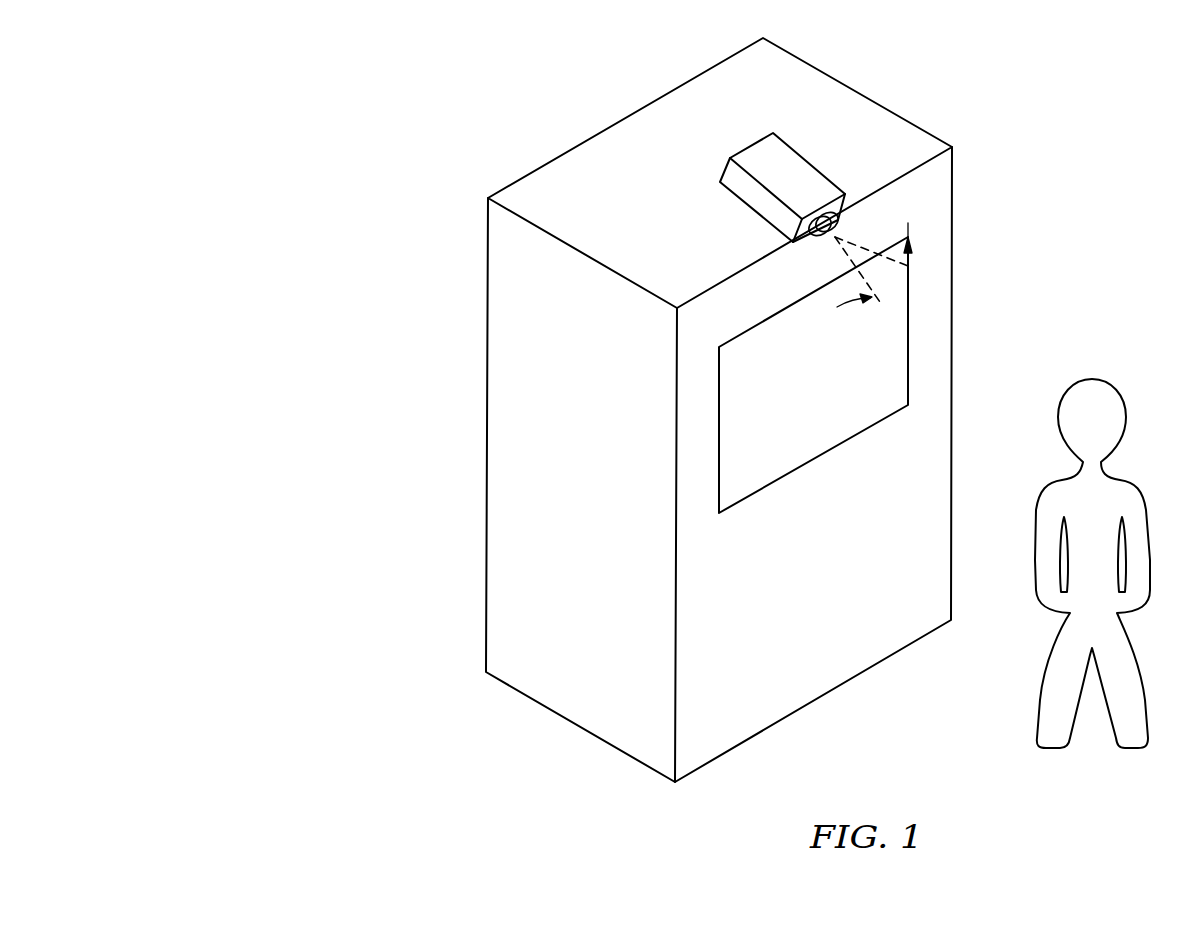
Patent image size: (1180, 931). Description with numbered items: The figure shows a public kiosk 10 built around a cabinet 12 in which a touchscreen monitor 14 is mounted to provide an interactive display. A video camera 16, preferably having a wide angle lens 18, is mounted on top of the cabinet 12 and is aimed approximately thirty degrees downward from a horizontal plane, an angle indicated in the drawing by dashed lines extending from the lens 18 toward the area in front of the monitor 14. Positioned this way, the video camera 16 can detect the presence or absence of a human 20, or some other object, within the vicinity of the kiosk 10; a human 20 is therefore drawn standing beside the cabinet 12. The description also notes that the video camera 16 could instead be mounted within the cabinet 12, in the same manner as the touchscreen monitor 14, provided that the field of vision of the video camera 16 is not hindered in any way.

The public kiosk 10 is at (415, 277).
The cabinet 12 is at (502, 503).
The touchscreen monitor 14 is at (897, 358).
The video camera 16 is at (802, 170).
The wide angle lens 18 is at (840, 224).
The human 20 is at (1117, 487).